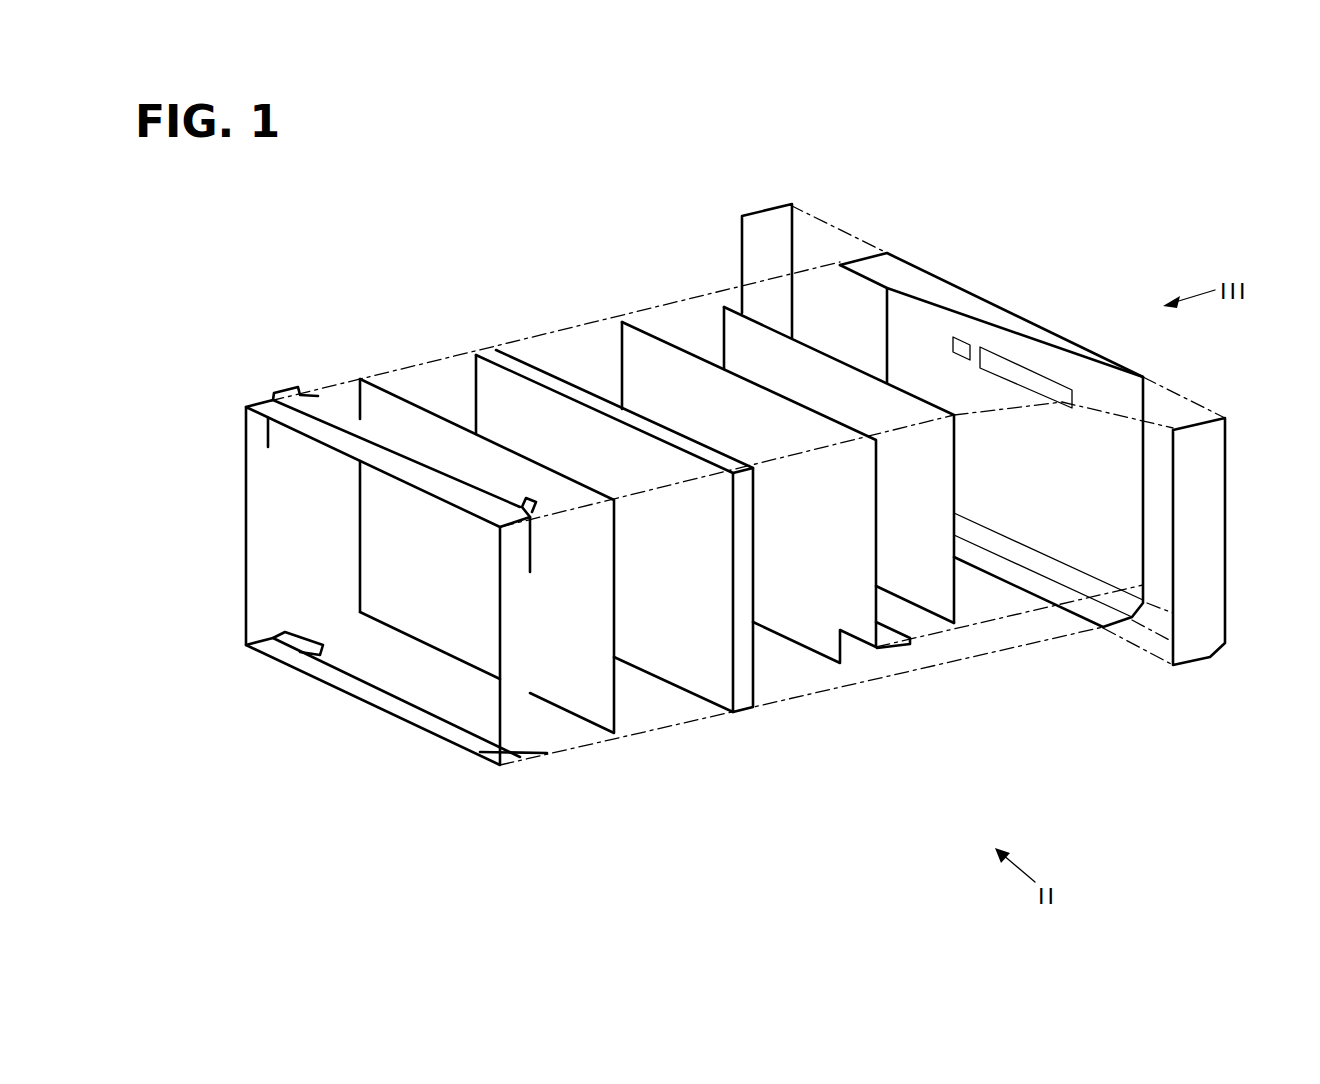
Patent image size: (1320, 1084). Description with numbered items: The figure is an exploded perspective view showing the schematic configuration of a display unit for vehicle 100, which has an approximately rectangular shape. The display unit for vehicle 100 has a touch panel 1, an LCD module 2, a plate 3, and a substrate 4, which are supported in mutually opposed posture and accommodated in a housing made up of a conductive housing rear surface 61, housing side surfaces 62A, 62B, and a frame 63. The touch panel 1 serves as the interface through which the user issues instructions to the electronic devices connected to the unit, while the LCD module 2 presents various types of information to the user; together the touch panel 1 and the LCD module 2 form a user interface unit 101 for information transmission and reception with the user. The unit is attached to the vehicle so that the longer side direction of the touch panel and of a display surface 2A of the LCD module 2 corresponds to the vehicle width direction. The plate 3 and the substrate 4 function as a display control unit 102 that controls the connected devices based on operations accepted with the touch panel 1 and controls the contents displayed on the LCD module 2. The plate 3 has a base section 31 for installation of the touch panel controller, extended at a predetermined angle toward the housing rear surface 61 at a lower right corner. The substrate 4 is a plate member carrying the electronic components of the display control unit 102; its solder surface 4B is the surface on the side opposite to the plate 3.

The display unit for vehicle 100 is at (352, 253).
The user interface unit 101 is at (775, 798).
The display control unit 102 is at (605, 217).
The touch panel 1 is at (622, 713).
The LCD module 2 is at (748, 685).
The display surface 2A is at (492, 390).
The plate 3 is at (637, 350).
The base section 31 is at (892, 640).
The substrate 4 is at (735, 330).
The solder surface 4B is at (925, 543).
The housing rear surface 61 is at (1120, 555).
The housing side surface 62A is at (1200, 613).
The housing side surface 62B is at (780, 203).
The frame 63 is at (437, 738).